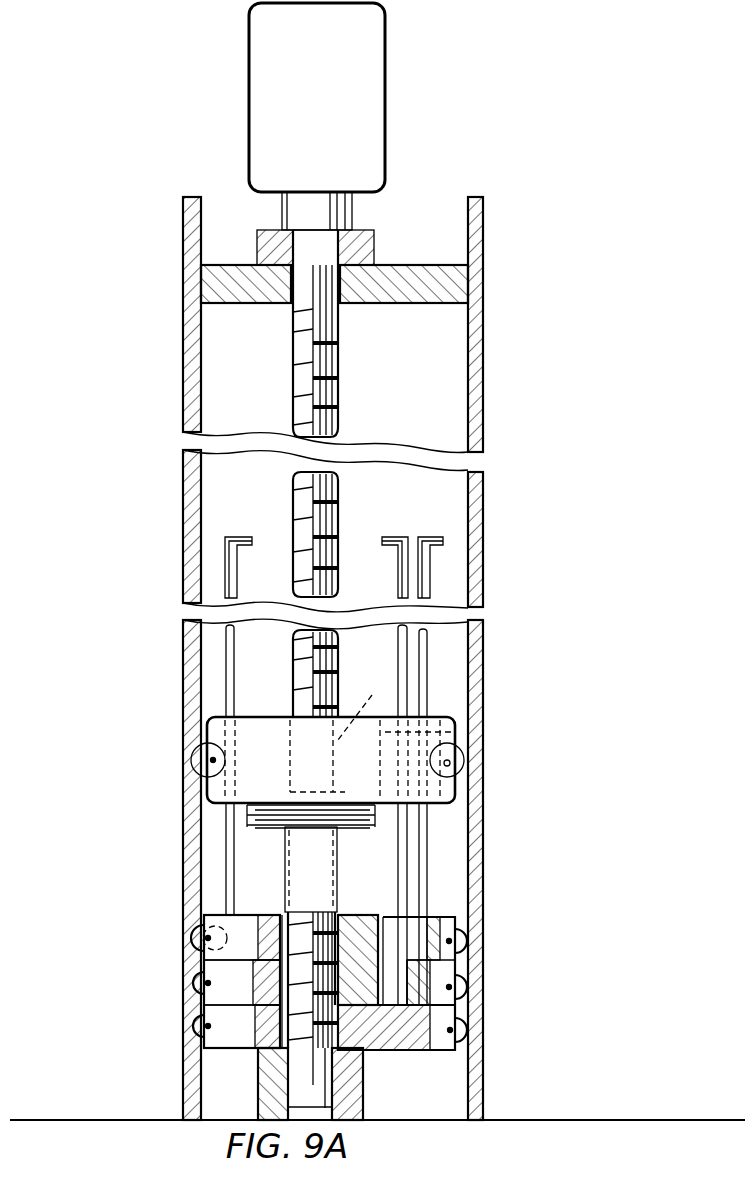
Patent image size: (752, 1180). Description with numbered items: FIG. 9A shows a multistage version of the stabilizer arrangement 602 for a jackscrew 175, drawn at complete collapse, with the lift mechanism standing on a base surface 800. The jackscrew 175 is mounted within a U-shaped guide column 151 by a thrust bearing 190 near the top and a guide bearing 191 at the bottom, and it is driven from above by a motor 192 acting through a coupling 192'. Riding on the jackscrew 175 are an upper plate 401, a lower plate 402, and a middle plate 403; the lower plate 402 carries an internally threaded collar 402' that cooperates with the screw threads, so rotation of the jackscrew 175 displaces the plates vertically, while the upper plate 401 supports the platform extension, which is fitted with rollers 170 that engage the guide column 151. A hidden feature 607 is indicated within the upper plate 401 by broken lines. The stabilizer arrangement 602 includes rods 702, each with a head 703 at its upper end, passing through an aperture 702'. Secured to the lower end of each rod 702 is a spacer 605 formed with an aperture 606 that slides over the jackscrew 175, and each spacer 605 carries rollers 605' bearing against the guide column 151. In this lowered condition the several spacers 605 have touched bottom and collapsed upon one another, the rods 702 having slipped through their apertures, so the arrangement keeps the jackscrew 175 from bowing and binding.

The support surface 800 is at (82, 1118).
The motor 192 is at (357, 97).
The coupling 192' is at (281, 211).
The thrust bearing 190 is at (383, 240).
The guide column 151 is at (183, 262).
The stabilizer arrangement 602 is at (361, 776).
The jackscrew 175 is at (338, 388).
The head 703 is at (237, 533).
The rod 702 is at (326, 781).
The upper plate 401 is at (280, 795).
The rollers 170 is at (200, 745).
The hidden channel 607 is at (362, 705).
The aperture 702' is at (326, 751).
The middle plate 403 is at (455, 813).
The lower plate 402 is at (246, 839).
The internally threaded collar 402' is at (287, 869).
The spacer 605 is at (282, 996).
The rollers 605' is at (330, 983).
The aperture 606 is at (250, 976).
The guide bearing 191 is at (363, 1079).